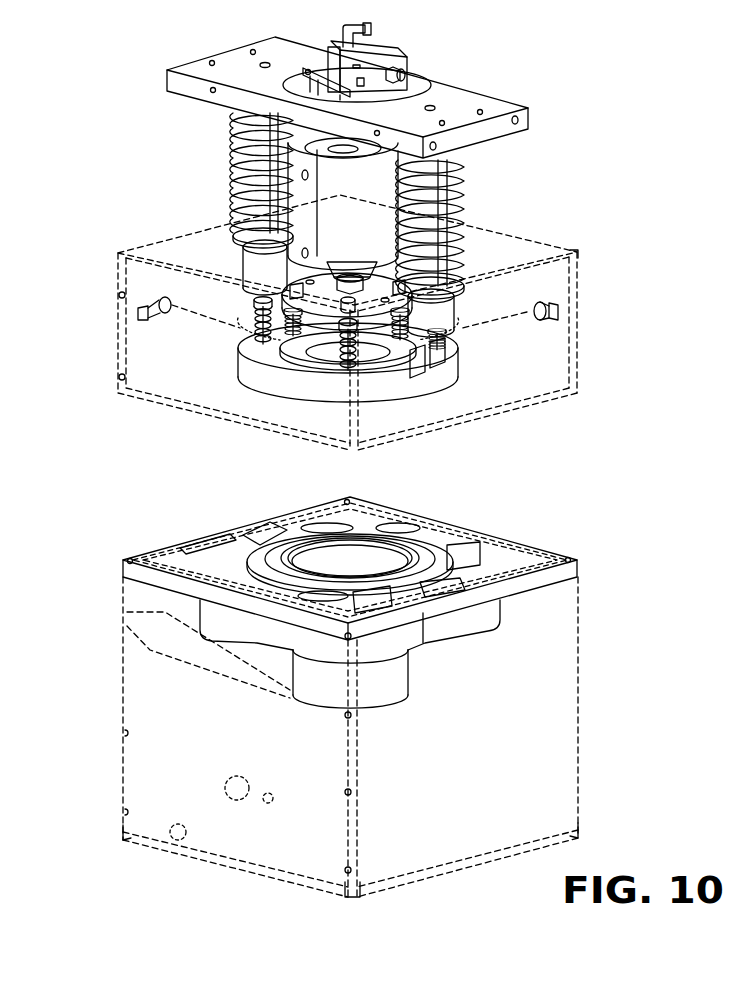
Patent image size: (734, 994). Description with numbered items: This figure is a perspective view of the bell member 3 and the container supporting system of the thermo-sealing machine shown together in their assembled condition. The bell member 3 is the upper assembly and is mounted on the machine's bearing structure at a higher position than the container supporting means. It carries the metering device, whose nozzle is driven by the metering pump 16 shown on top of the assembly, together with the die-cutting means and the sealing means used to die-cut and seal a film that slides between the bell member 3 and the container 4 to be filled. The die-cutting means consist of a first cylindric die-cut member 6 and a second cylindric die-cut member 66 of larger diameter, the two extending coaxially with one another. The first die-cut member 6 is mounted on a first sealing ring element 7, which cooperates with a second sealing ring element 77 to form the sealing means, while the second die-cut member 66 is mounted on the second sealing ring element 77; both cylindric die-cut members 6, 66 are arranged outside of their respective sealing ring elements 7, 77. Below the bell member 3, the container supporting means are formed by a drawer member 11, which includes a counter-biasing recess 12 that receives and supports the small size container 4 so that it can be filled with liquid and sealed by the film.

The metering pump 16 is at (350, 90).
The bell member 3 is at (587, 322).
The first cylindric die-cut member 6 is at (236, 332).
The second cylindric die-cut member 66 is at (230, 367).
The first sealing ring element 7 is at (317, 357).
The second sealing ring element 77 is at (277, 385).
The counter-biasing recess 12 is at (252, 562).
The container 4 is at (396, 690).
The drawer member 11 is at (587, 690).